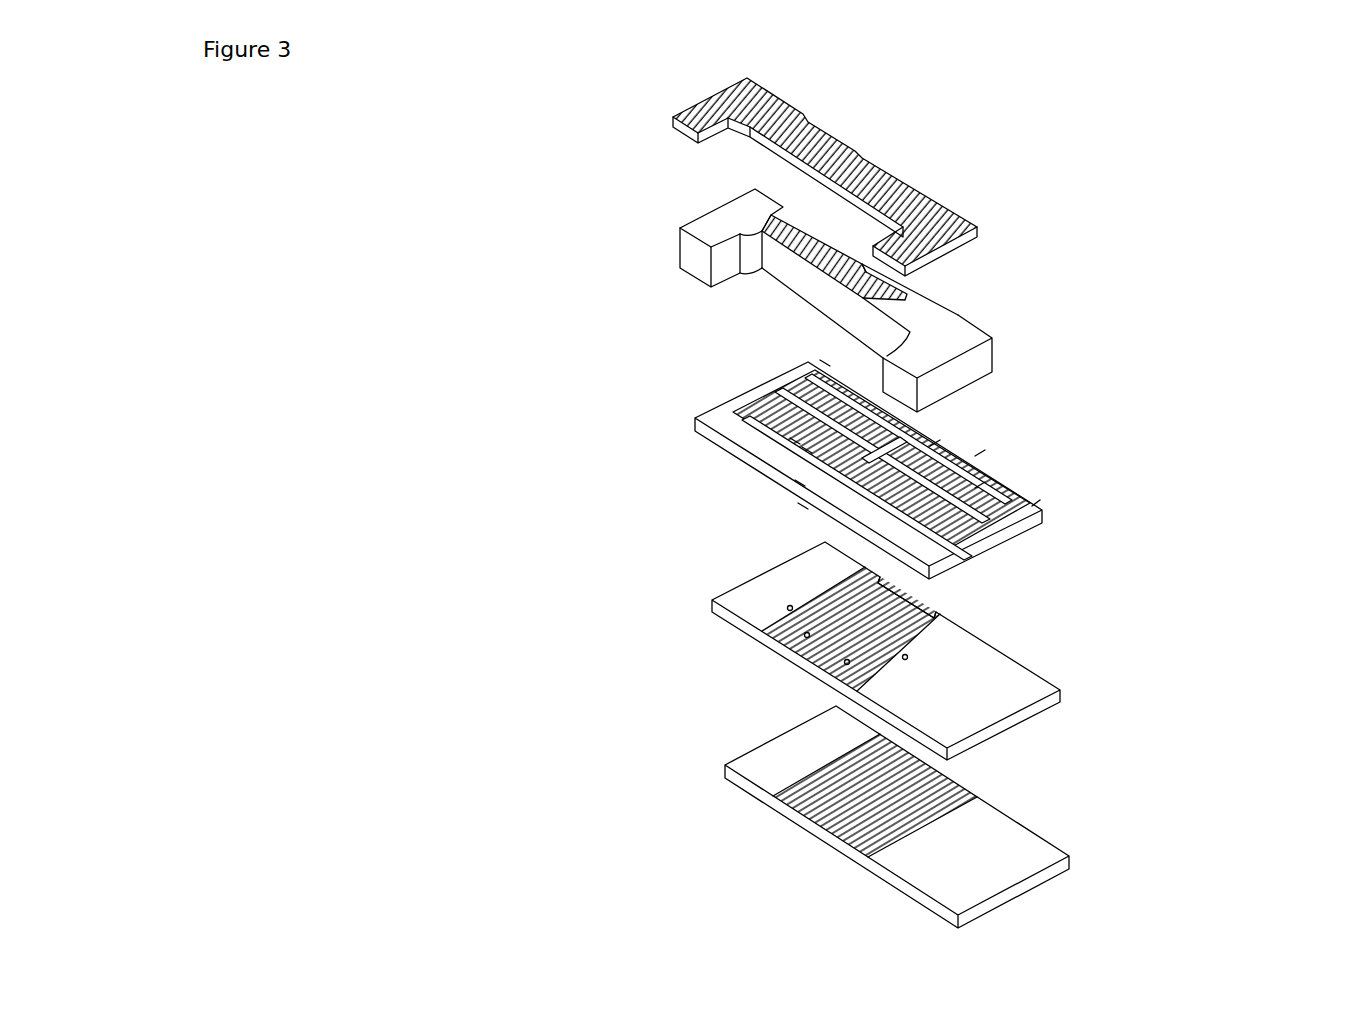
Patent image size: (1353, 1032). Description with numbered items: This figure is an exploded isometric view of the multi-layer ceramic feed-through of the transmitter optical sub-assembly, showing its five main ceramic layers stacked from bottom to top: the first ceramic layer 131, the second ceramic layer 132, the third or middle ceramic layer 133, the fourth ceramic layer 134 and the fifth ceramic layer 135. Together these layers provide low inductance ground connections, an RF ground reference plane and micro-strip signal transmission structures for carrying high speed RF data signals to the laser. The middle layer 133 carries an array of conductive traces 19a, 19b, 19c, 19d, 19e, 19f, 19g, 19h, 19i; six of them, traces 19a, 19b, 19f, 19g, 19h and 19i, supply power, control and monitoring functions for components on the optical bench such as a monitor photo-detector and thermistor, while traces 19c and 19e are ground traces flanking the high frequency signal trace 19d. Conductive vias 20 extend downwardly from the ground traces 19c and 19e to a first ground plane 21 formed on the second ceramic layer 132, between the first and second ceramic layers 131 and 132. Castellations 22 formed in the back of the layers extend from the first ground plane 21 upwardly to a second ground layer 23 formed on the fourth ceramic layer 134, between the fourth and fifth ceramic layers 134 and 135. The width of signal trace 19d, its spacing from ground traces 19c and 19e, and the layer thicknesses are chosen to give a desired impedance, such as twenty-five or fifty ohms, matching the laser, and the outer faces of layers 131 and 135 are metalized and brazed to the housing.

The first ceramic layer 131 is at (1020, 815).
The second ceramic layer 132 is at (1012, 657).
The third ceramic layer 133 is at (1000, 474).
The fourth ceramic layer 134 is at (960, 318).
The fifth ceramic layer 135 is at (962, 204).
The conductive trace 19a is at (820, 360).
The conductive trace 19b is at (790, 438).
The ground trace 19c is at (802, 447).
The high frequency signal trace 19d is at (795, 480).
The ground trace 19e is at (800, 502).
The conductive trace 19f is at (940, 440).
The conductive trace 19g is at (985, 450).
The conductive trace 19h is at (985, 482).
The conductive trace 19i is at (1040, 500).
The conductive vias 20 is at (818, 638).
The first ground plane 21 is at (835, 624).
The castellations 22 is at (820, 223).
The second ground layer 23 is at (790, 243).